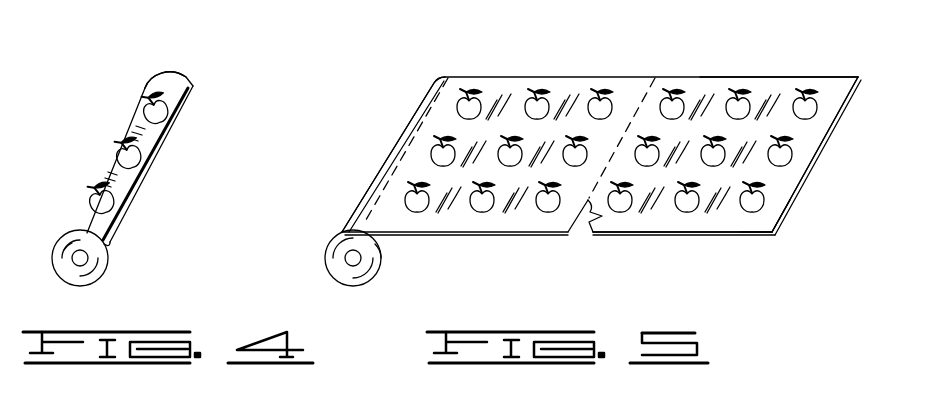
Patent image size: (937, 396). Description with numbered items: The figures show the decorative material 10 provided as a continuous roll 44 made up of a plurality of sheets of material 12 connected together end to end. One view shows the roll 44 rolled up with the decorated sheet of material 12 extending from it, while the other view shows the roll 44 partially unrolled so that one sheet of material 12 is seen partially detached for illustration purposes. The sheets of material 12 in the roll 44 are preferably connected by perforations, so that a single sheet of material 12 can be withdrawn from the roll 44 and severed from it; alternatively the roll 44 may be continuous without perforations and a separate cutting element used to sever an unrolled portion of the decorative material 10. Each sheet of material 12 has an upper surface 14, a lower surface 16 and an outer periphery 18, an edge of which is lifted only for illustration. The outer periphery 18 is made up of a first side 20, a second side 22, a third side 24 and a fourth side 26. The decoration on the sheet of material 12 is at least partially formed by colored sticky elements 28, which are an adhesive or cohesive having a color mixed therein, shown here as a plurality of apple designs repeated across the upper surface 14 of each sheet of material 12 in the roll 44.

In FIG. 4, the decorative material 10 is at (146, 65).
In FIG. 5, the decorative material 10 is at (556, 64).
In FIG. 4, the sheet of material 12 is at (188, 140).
In FIG. 5, the sheet of material 12 is at (513, 66).
In FIG. 5, the upper surface 14 is at (683, 82).
In FIG. 5, the lower surface 16 is at (588, 209).
In FIG. 5, the outer periphery 18 is at (758, 237).
In FIG. 5, the first side 20 is at (803, 186).
In FIG. 5, the second side 22 is at (587, 199).
In FIG. 5, the third side 24 is at (750, 77).
In FIG. 5, the fourth side 26 is at (673, 235).
In FIG. 5, the colored sticky elements 28 is at (767, 198).
In FIG. 4, the roll 44 is at (180, 77).
In FIG. 5, the roll 44 is at (438, 76).